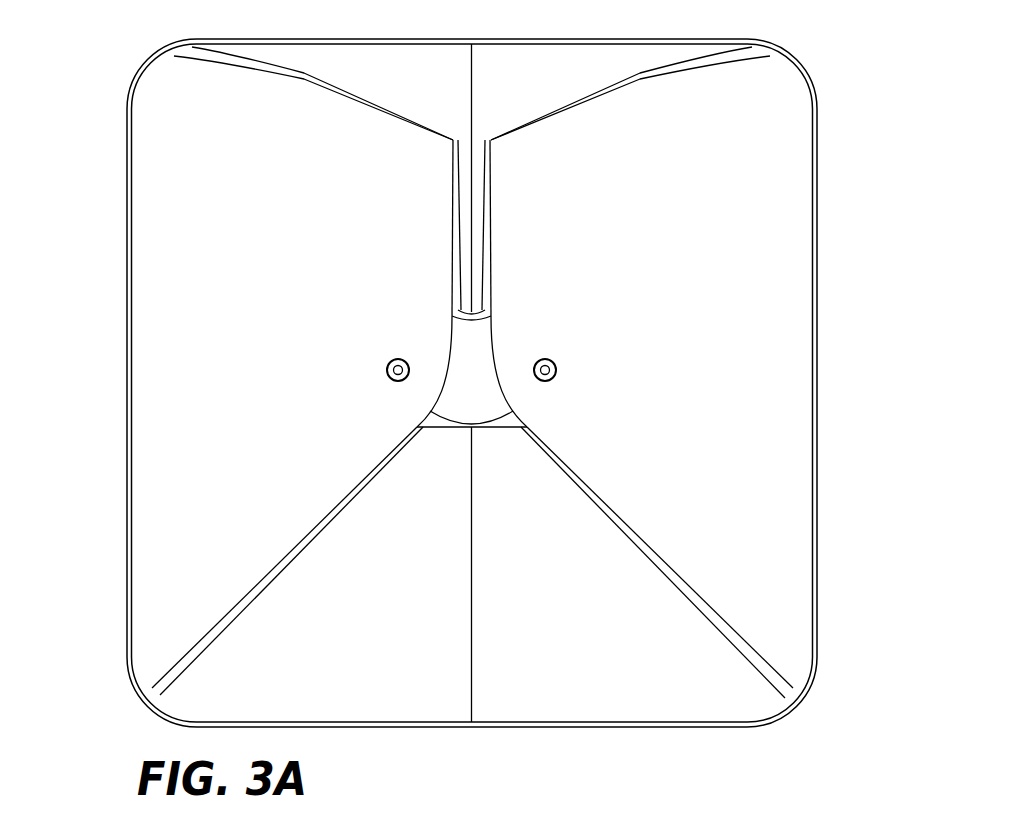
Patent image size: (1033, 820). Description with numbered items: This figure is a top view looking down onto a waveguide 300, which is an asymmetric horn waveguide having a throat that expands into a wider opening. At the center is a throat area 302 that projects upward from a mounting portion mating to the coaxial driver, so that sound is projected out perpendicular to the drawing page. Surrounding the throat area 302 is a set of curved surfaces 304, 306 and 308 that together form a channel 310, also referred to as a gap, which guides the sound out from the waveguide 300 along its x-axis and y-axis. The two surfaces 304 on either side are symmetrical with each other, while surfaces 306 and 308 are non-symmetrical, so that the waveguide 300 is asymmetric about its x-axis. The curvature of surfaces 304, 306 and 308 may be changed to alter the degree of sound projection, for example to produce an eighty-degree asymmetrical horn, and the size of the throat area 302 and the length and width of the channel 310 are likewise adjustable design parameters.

The waveguide 300 is at (126, 46).
The throat area 302 is at (484, 393).
The curved surfaces 304 is at (290, 252).
The curved surface 306 is at (437, 88).
The curved surface 308 is at (393, 618).
The channel 310 is at (478, 183).